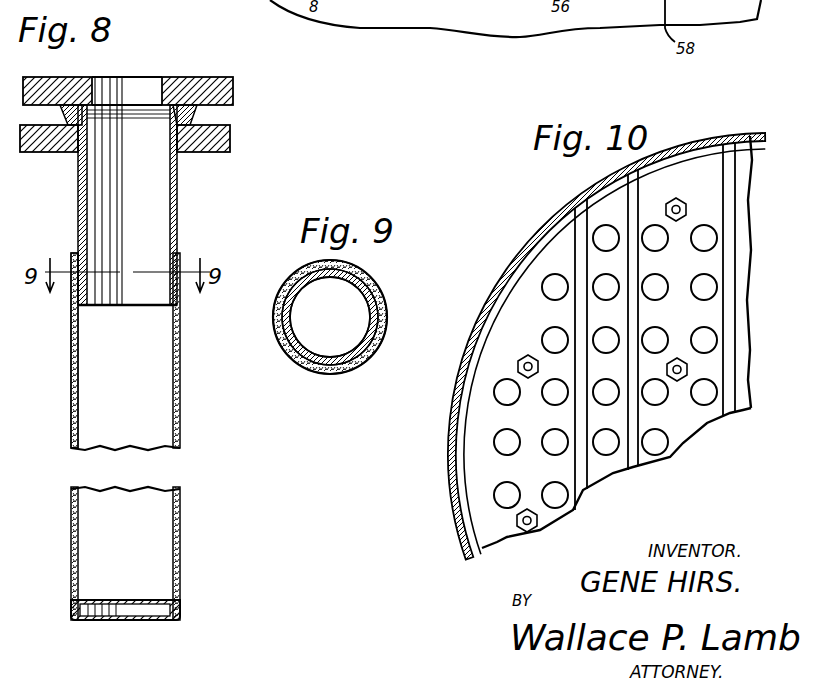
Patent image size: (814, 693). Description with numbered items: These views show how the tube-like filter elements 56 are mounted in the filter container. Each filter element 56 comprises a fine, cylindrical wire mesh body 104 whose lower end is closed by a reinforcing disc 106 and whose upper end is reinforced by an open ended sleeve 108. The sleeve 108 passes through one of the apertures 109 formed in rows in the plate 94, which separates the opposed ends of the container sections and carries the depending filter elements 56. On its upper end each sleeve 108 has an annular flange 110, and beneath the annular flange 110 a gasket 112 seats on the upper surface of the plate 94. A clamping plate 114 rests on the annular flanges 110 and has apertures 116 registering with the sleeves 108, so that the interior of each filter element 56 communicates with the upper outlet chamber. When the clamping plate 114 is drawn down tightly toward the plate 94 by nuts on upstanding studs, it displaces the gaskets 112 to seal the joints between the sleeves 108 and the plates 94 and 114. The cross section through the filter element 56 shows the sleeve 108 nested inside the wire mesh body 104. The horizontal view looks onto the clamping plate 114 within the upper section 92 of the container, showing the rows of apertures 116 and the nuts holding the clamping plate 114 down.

In FIG. 8, the filter element 56 is at (188, 414).
In FIG. 9, the filter element 56 is at (394, 300).
In FIG. 10, the upper section 92 is at (537, 236).
In FIG. 8, the plate 94 is at (231, 140).
In FIG. 8, the wire mesh body 104 is at (72, 388).
In FIG. 9, the wire mesh body 104 is at (330, 335).
In FIG. 8, the reinforcing disc 106 is at (145, 612).
In FIG. 8, the sleeve 108 is at (178, 212).
In FIG. 9, the sleeve 108 is at (360, 353).
In FIG. 8, the aperture 109 is at (63, 146).
In FIG. 8, the annular flange 110 is at (196, 115).
In FIG. 8, the gasket 112 is at (62, 114).
In FIG. 8, the clamping plate 114 is at (224, 80).
In FIG. 10, the clamping plate 114 is at (475, 473).
In FIG. 10, the aperture 116 is at (605, 232).